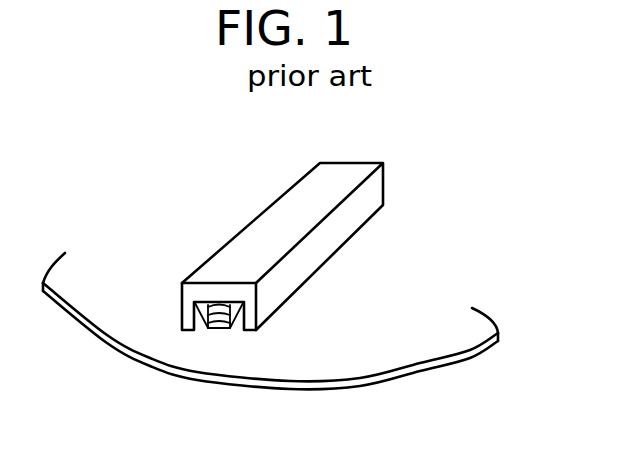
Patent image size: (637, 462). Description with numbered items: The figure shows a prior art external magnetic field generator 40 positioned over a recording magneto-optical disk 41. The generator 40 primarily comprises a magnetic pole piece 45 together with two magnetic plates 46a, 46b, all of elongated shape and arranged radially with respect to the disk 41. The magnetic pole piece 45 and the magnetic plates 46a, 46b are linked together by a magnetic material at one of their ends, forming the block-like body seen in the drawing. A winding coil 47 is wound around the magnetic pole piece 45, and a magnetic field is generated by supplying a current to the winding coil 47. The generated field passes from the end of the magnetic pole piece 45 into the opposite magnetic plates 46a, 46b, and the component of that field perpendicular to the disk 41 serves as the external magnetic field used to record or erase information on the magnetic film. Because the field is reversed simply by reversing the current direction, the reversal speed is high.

The external magnetic field generator 40 is at (215, 197).
The recording magneto-optical disk 41 is at (443, 340).
The magnetic pole piece 45 is at (218, 333).
The magnetic plate 46a is at (183, 333).
The magnetic plate 46b is at (318, 268).
The winding coil 47 is at (213, 303).